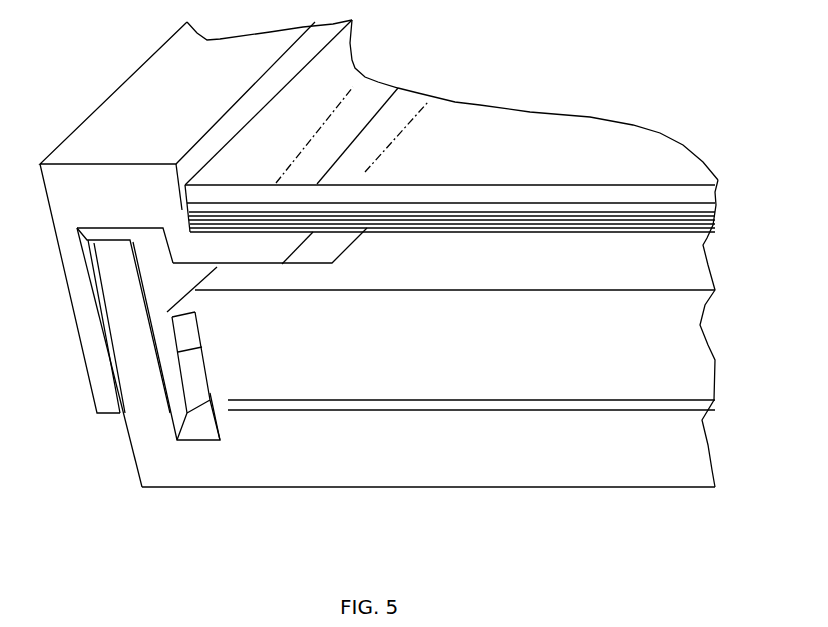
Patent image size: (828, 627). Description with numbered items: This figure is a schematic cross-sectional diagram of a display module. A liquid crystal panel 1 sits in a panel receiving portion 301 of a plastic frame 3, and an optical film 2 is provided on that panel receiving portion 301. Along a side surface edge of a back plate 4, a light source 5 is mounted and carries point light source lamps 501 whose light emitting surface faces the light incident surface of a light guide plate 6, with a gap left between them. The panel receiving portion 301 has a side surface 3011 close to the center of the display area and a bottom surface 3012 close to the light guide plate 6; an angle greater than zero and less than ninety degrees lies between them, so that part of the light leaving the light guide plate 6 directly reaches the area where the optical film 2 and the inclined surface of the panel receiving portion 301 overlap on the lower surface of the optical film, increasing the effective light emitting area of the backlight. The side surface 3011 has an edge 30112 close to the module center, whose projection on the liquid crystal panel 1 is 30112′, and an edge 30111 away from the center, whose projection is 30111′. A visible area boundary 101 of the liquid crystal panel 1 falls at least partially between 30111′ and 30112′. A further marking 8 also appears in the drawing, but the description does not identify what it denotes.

The liquid crystal panel 1 is at (240, 200).
The visible area boundary 101 is at (380, 108).
The optical film 2 is at (370, 207).
The plastic frame 3 is at (117, 203).
The panel receiving portion 301 is at (305, 247).
The side surface of the panel receiving portion 3011 is at (315, 241).
The bottom surface of the panel receiving portion 3012 is at (286, 264).
The edge of the panel receiving portion side surface away from the center 30111 is at (270, 243).
The edge of the panel receiving portion side surface close to the center 30112 is at (355, 243).
The projection of edge 30111 30111′ is at (323, 123).
The projection of edge 30112 30112′ is at (402, 132).
The back plate 4 is at (115, 307).
The light source 5 is at (187, 380).
The point light source lamps 501 is at (187, 353).
The light guide plate 6 is at (368, 378).
The unlabeled element 8 is at (281, 252).